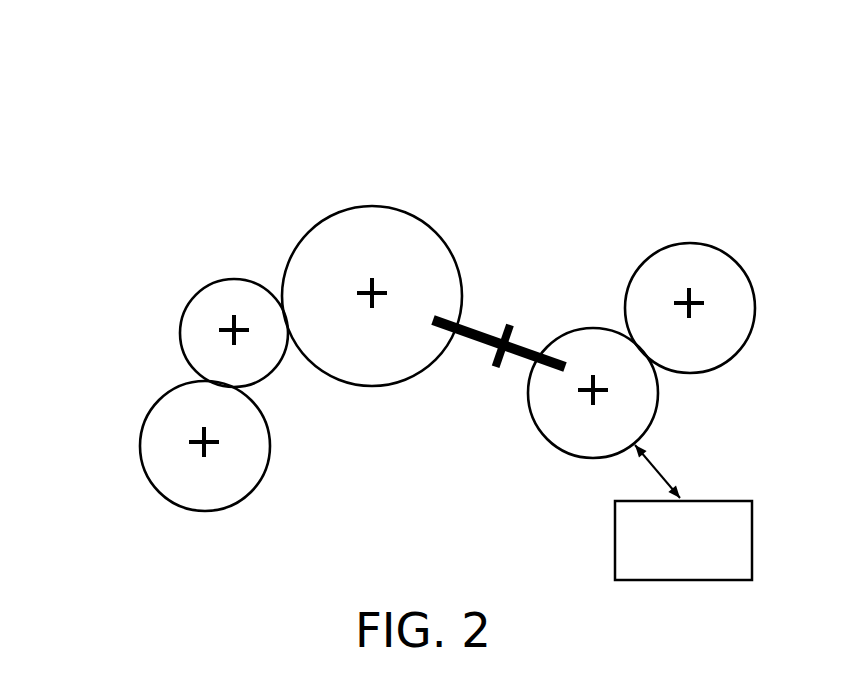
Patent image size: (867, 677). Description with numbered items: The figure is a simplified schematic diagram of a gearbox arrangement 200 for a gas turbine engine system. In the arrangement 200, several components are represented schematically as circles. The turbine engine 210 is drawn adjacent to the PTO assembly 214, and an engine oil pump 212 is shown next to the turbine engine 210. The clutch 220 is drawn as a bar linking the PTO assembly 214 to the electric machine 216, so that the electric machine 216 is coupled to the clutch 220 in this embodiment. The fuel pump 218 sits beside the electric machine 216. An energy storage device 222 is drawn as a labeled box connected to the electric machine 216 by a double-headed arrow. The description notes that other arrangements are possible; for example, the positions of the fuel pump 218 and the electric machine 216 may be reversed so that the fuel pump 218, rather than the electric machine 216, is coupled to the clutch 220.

The gearbox arrangement 200 is at (92, 120).
The turbine engine 210 is at (217, 280).
The engine oil pump 212 is at (270, 438).
The PTO assembly 214 is at (430, 225).
The electric machine 216 is at (570, 328).
The fuel pump 218 is at (710, 243).
The clutch 220 is at (487, 323).
The energy storage device 222 is at (683, 512).